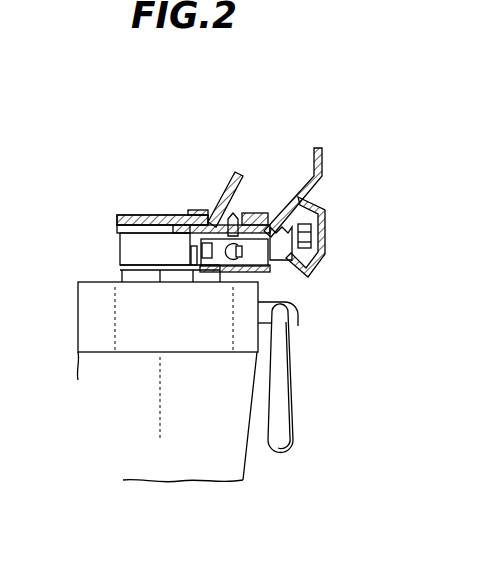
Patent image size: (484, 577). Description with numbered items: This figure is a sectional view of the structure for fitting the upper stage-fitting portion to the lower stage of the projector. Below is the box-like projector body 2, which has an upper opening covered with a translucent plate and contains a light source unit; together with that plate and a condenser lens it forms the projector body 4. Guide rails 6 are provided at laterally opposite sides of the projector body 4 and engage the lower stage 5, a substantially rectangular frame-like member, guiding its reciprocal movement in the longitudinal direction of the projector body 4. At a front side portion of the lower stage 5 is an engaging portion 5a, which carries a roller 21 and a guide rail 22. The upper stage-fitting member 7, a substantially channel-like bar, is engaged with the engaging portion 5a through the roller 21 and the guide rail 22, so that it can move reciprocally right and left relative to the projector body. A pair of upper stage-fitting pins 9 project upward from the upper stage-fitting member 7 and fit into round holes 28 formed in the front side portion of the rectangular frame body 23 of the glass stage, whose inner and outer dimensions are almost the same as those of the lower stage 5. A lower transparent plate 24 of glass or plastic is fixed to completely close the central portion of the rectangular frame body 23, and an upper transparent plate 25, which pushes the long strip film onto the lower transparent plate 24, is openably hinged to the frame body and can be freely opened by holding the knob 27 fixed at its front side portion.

The box-like projector body 2 is at (227, 466).
The projector body 4 is at (266, 412).
The lower stage 5 is at (108, 246).
The engaging portion 5a is at (281, 267).
The guide rails 6 is at (131, 278).
The upper stage-fitting member 7 is at (324, 212).
The upper stage-fitting pins 9 is at (252, 226).
The roller 21 is at (305, 237).
The guide rail 22 is at (273, 212).
The rectangular frame body 23 is at (163, 215).
The lower transparent plate 24 is at (117, 216).
The upper transparent plate 25 is at (137, 215).
The knob 27 is at (233, 213).
The round holes 28 is at (213, 209).